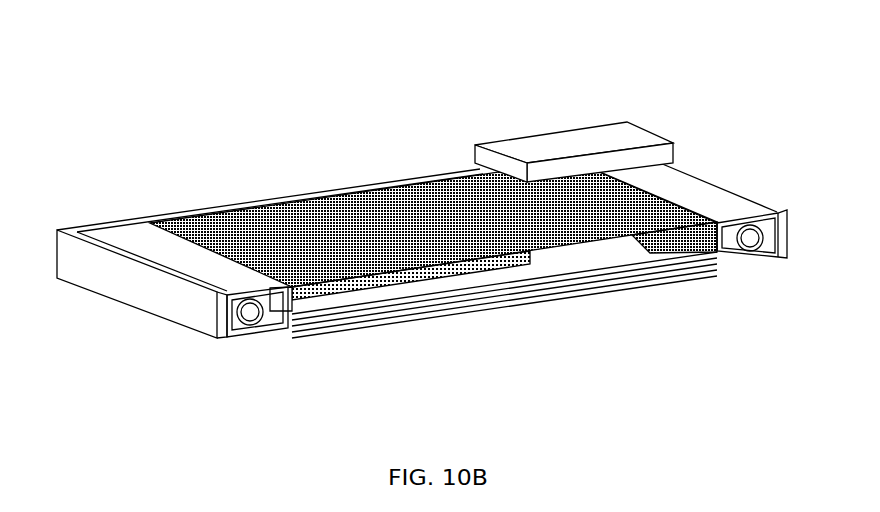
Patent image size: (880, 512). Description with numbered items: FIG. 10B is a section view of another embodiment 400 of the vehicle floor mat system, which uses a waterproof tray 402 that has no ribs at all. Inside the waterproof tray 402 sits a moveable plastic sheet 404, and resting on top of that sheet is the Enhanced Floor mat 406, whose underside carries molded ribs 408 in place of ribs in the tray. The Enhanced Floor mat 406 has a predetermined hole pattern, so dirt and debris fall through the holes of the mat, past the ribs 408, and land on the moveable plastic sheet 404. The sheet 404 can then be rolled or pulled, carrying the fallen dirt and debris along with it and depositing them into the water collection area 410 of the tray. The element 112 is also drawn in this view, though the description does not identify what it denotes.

The embodiment 400 is at (197, 108).
The waterproof tray 402 is at (146, 292).
The moveable plastic sheet 404 is at (268, 311).
The Enhanced Floor mat 406 is at (411, 218).
The ribs 408 is at (655, 243).
The water collection area 410 is at (230, 328).
The block 112 is at (600, 143).